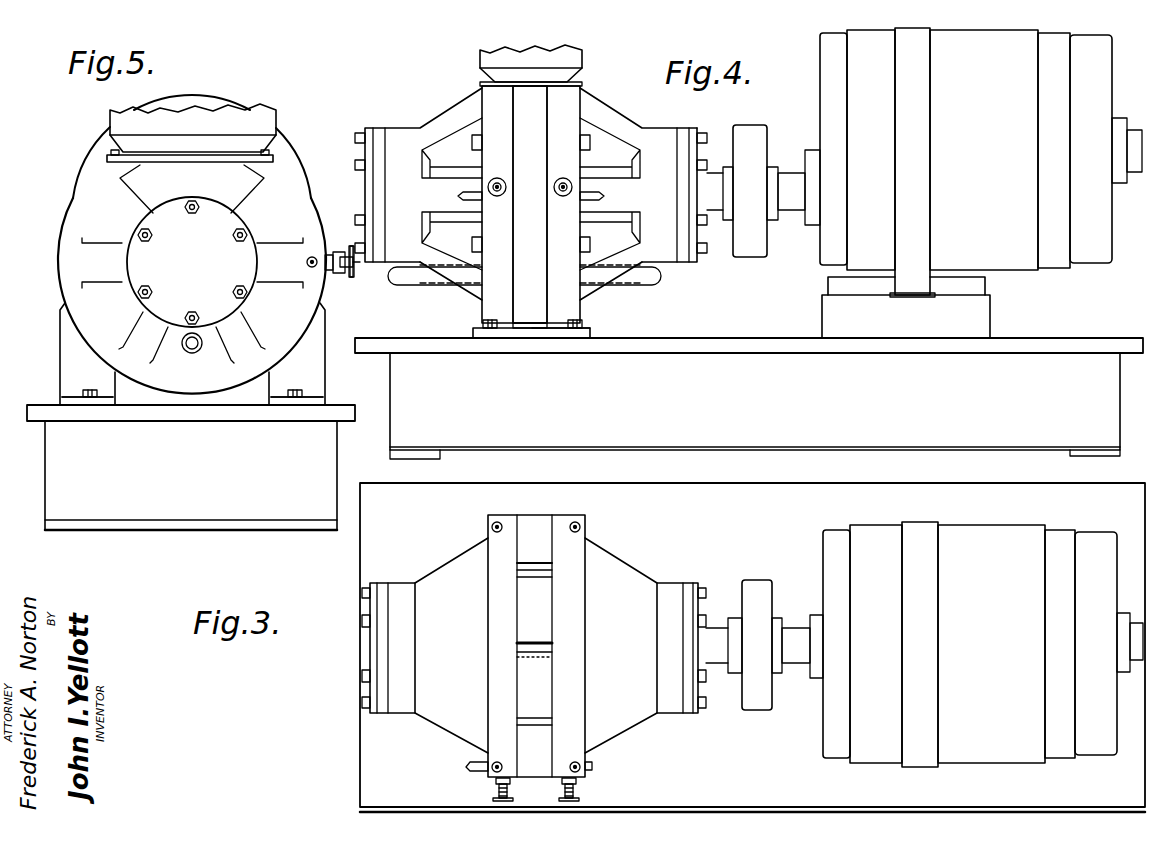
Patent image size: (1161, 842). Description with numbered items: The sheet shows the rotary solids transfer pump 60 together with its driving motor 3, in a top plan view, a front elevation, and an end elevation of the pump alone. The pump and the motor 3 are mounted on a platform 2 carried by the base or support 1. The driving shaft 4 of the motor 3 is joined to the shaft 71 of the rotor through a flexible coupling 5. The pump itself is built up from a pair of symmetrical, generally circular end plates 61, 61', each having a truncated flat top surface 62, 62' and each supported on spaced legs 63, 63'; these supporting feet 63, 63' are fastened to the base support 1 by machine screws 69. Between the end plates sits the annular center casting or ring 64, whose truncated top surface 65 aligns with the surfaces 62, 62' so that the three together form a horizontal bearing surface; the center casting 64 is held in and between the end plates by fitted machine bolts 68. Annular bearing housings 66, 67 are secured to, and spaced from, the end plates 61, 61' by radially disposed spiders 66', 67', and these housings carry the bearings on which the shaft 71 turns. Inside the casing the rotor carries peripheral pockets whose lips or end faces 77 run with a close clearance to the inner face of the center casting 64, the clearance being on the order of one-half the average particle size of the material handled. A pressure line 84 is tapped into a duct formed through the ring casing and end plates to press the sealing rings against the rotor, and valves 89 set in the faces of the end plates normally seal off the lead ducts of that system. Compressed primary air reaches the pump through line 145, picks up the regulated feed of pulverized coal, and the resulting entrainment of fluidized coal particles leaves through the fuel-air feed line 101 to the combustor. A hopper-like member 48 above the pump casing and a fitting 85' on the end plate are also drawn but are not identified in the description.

In FIG. 5, the base or support 1 is at (190, 501).
In FIG. 4, the base or support 1 is at (758, 391).
In FIG. 5, the platform 2 is at (205, 415).
In FIG. 4, the platform 2 is at (697, 336).
In FIG. 3, the platform 2 is at (632, 484).
In FIG. 4, the driving motor 3 is at (975, 180).
In FIG. 3, the driving motor 3 is at (990, 662).
In FIG. 4, the driving shaft 4 is at (799, 187).
In FIG. 3, the driving shaft 4 is at (802, 646).
In FIG. 4, the flexible coupling 5 is at (750, 191).
In FIG. 3, the flexible coupling 5 is at (755, 645).
In FIG. 5, the feed hopper 48 is at (250, 147).
In FIG. 4, the feed hopper 48 is at (560, 76).
In FIG. 4, the rotary solids transfer pump 60 is at (535, 186).
In FIG. 5, the end plate 61 is at (209, 250).
In FIG. 4, the end plate 61 is at (464, 241).
In FIG. 4, the end plate 61' is at (594, 241).
In FIG. 4, the truncated flat top surface 62 is at (499, 204).
In FIG. 3, the truncated flat top surface 62 is at (456, 645).
In FIG. 4, the truncated flat top surface 62' is at (562, 204).
In FIG. 3, the truncated flat top surface 62' is at (616, 645).
In FIG. 5, the leg 63 is at (192, 424).
In FIG. 4, the leg 63 is at (524, 351).
In FIG. 4, the leg 63' is at (561, 351).
In FIG. 4, the annular center casting 64 is at (530, 304).
In FIG. 4, the truncated top surface 65 is at (530, 88).
In FIG. 3, the truncated top surface 65 is at (530, 523).
In FIG. 4, the annular bearing housing 66 is at (411, 182).
In FIG. 3, the annular bearing housing 66 is at (388, 631).
In FIG. 4, the spider 66' is at (452, 127).
In FIG. 4, the annular bearing housing 67 is at (643, 190).
In FIG. 3, the annular bearing housing 67 is at (681, 631).
In FIG. 4, the spider 67' is at (558, 193).
In FIG. 4, the fitted machine bolt 68 is at (471, 142).
In FIG. 5, the machine screw 69 is at (90, 389).
In FIG. 4, the machine screw 69 is at (490, 319).
In FIG. 4, the shaft 71 is at (710, 163).
In FIG. 3, the shaft 71 is at (712, 638).
In FIG. 3, the end face 77 is at (541, 576).
In FIG. 4, the pressure line 84 is at (458, 196).
In FIG. 3, the pressure line 84 is at (468, 762).
In FIG. 4, the pipe fitting 85' is at (607, 194).
In FIG. 4, the valve 89 is at (497, 178).
In FIG. 3, the valve 89 is at (493, 792).
In FIG. 4, the fuel-air feed line 101 is at (655, 280).
In FIG. 5, the primary air line 145 is at (195, 353).
In FIG. 4, the primary air line 145 is at (425, 280).